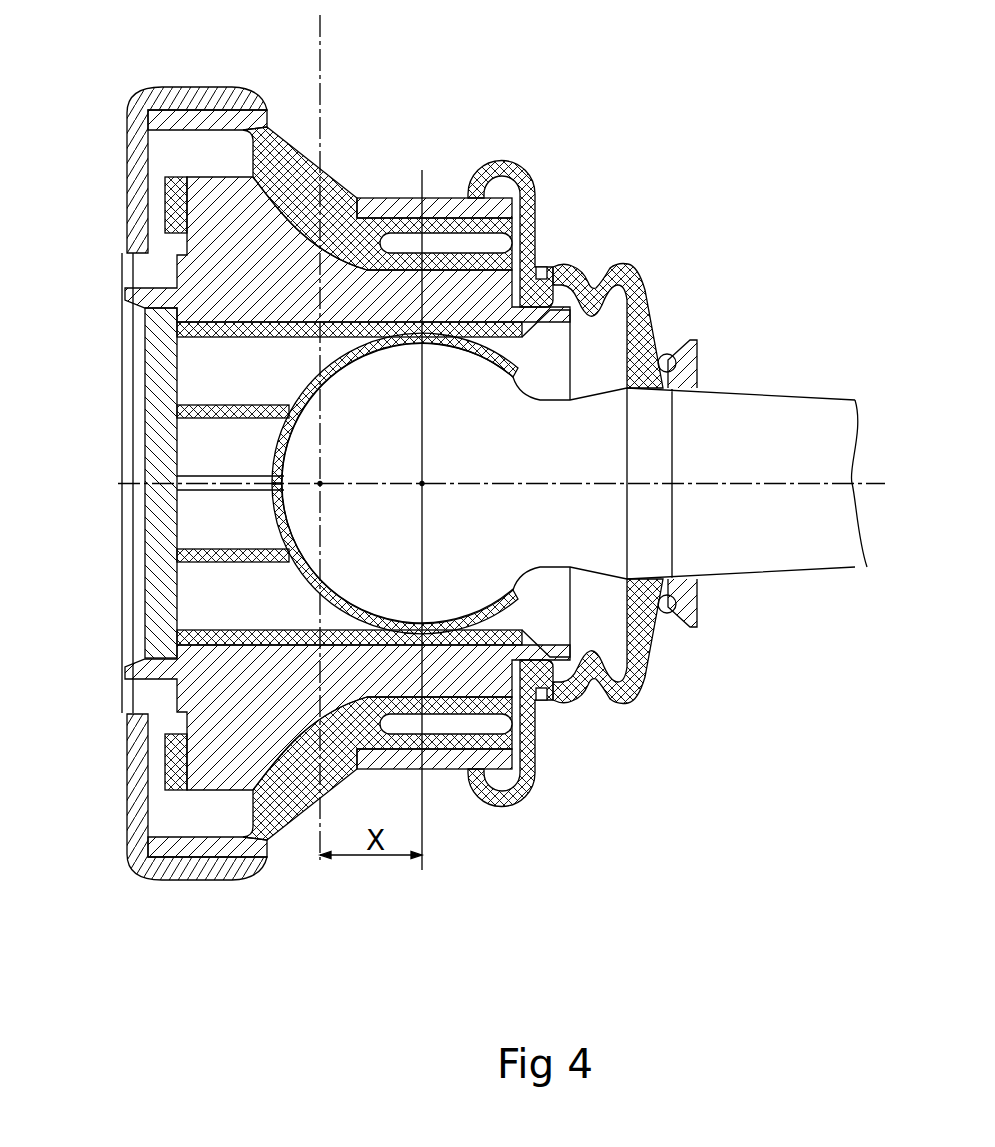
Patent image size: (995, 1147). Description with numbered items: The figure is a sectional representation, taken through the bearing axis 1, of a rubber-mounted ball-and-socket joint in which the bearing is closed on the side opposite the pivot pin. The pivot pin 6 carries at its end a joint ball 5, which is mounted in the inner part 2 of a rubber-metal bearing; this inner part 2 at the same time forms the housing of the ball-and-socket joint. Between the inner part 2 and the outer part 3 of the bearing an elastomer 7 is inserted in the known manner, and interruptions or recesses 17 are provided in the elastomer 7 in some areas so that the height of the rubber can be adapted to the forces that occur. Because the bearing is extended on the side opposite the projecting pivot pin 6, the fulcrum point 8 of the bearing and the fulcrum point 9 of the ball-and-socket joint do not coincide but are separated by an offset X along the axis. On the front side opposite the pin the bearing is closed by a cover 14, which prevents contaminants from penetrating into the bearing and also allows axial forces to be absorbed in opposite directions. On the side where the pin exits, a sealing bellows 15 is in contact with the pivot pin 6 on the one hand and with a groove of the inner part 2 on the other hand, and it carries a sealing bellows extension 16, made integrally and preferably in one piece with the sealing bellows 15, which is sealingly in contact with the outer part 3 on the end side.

The bearing axis 1 is at (783, 473).
The inner part 2 is at (483, 667).
The outer part 3 is at (434, 763).
The joint ball 5 is at (483, 432).
The pivot pin 6 is at (722, 435).
The elastomer 7 is at (363, 246).
The fulcrum point of the bearing 8 is at (321, 495).
The fulcrum point of the ball-and-socket joint 9 is at (423, 495).
The cover 14 is at (138, 155).
The sealing bellows 15 is at (642, 345).
The sealing bellows extension 16 is at (530, 190).
The recesses 17 is at (433, 242).